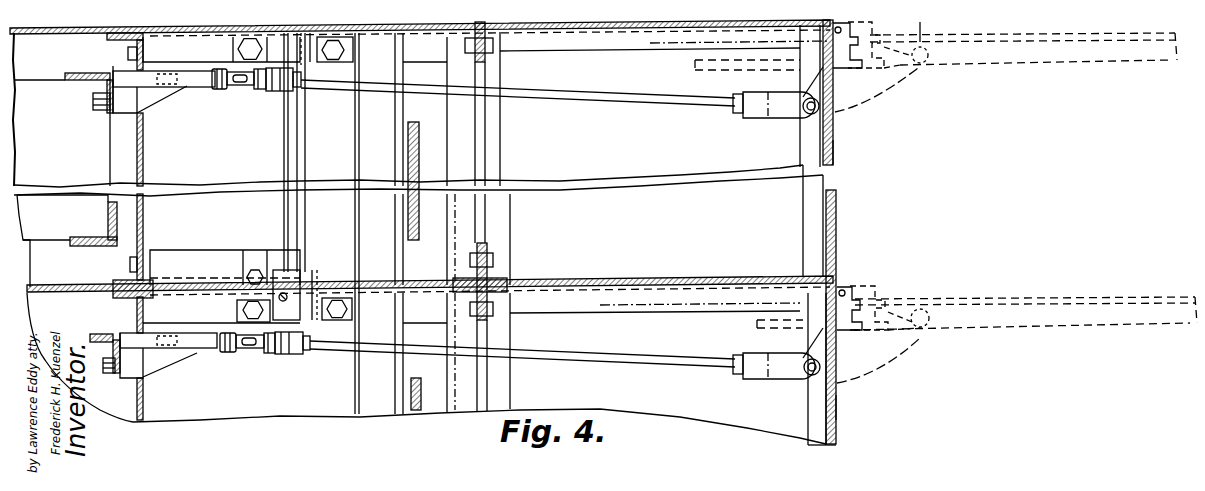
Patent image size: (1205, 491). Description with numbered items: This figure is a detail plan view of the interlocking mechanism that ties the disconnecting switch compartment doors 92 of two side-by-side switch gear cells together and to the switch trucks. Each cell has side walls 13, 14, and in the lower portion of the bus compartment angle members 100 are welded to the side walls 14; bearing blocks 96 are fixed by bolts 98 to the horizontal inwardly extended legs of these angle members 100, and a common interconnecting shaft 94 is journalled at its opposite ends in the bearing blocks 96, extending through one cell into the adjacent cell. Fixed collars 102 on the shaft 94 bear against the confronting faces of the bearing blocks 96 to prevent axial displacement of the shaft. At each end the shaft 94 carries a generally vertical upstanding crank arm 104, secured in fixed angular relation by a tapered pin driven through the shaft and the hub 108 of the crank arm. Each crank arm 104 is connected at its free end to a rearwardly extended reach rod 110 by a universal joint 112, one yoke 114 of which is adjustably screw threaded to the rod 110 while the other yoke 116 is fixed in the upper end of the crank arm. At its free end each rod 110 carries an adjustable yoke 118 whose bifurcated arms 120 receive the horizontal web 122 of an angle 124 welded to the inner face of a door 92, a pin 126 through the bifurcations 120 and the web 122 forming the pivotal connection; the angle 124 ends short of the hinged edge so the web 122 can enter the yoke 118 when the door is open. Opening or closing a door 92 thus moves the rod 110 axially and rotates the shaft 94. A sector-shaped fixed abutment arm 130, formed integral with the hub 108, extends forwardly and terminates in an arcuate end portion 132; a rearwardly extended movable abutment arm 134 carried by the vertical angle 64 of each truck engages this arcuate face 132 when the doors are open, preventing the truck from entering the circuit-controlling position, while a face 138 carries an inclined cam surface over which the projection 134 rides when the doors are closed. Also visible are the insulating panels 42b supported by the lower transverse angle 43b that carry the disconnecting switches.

The side wall 13 is at (90, 296).
The side wall 14 is at (402, 27).
The insulating panel 42b is at (420, 160).
The lower transverse angle 43b is at (370, 152).
The vertical angle 64 is at (78, 72).
The disconnecting switch compartment door 92 is at (1017, 33).
The interconnecting shaft 94 is at (294, 148).
The bearing block 96 is at (296, 42).
The bolt 98 is at (243, 311).
The angle member 100 is at (182, 47).
The fixed collar 102 is at (315, 283).
The crank arm 104 is at (222, 90).
The hub 108 is at (304, 96).
The reach rod 110 is at (605, 101).
The universal joint 112 is at (245, 87).
The yoke 114 is at (264, 90).
The yoke 116 is at (250, 38).
The adjustable yoke 118 is at (755, 114).
The bifurcated arm 120 is at (777, 100).
The horizontal web 122 is at (822, 151).
The angle 124 is at (803, 200).
The pin 126 is at (806, 112).
The fixed abutment arm 130 is at (207, 88).
The arcuate end portion 132 is at (489, 18).
The movable abutment arm 134 is at (194, 76).
The face 138 is at (197, 318).